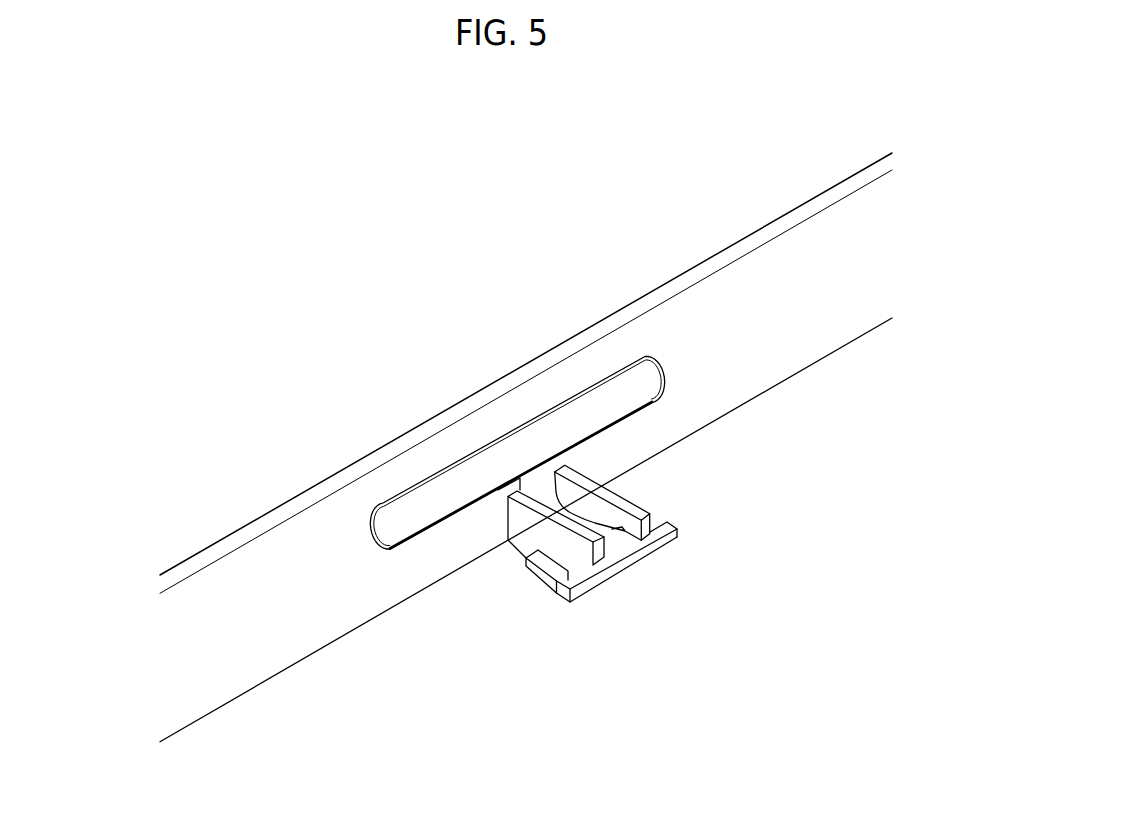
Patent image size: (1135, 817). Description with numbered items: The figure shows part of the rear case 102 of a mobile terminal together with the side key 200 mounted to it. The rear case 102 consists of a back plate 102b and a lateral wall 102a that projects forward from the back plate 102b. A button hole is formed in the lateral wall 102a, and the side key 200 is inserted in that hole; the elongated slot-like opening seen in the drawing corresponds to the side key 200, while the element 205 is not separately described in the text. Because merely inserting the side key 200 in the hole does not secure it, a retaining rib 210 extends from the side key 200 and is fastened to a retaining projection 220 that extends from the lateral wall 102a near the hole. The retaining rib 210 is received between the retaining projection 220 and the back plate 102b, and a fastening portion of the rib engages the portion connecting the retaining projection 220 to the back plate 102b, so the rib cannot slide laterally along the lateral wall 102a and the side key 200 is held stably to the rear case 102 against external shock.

The rear case 102 is at (780, 142).
The lateral wall 102a is at (698, 325).
The back plate 102b is at (836, 411).
The side key 200 is at (527, 423).
The slot opening 205 is at (575, 430).
The retaining rib 210 is at (532, 490).
The retaining projection 220 is at (550, 513).